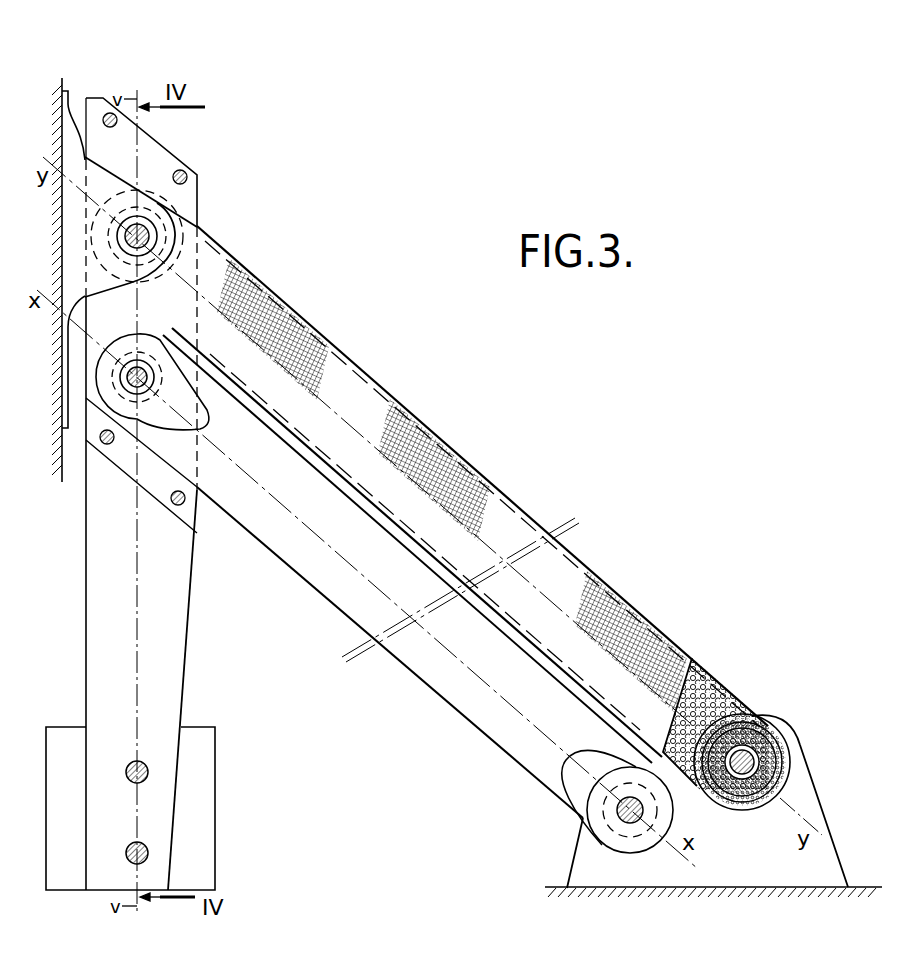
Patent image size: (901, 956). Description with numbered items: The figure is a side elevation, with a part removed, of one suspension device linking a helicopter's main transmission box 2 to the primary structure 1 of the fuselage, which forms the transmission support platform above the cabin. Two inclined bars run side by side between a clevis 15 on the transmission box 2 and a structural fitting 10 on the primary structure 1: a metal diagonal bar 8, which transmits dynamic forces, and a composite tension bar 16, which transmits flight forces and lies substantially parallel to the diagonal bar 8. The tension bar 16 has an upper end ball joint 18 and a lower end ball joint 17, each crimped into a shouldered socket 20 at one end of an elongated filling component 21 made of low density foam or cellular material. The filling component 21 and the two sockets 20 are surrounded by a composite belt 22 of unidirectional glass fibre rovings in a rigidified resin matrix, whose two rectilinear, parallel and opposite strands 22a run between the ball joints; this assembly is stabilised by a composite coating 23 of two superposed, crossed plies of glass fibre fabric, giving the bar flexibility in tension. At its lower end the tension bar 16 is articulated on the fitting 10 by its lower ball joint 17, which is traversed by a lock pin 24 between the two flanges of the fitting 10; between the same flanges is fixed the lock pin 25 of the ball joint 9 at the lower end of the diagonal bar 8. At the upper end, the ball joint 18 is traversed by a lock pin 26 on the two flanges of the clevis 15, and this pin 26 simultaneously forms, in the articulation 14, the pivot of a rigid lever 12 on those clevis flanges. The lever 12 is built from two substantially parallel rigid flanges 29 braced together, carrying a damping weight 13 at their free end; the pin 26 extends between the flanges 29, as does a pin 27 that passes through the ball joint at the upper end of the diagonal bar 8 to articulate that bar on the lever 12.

The primary structure 1 is at (553, 887).
The main transmission box 2 is at (60, 471).
The diagonal bar 8 is at (458, 697).
The ball joint 9 is at (587, 832).
The structural fitting 10 is at (793, 870).
The rigid lever 12 is at (192, 640).
The damping weight 13 is at (195, 755).
The articulation 14 is at (84, 226).
The clevis 15 is at (107, 182).
The tension bar 16 is at (500, 510).
The lower end ball joint 17 is at (765, 762).
The upper end ball joint 18 is at (187, 233).
The shouldered socket 20 is at (738, 698).
The filling component 21 is at (712, 673).
The composite belt 22 is at (463, 455).
The strands of the belt 22a is at (335, 345).
The composite coating 23 is at (377, 427).
The lock pin 24 is at (782, 735).
The lock pin 25 is at (617, 809).
The lock pin 26 is at (147, 240).
The pin 27 is at (127, 380).
The rigid flanges 29 is at (118, 627).